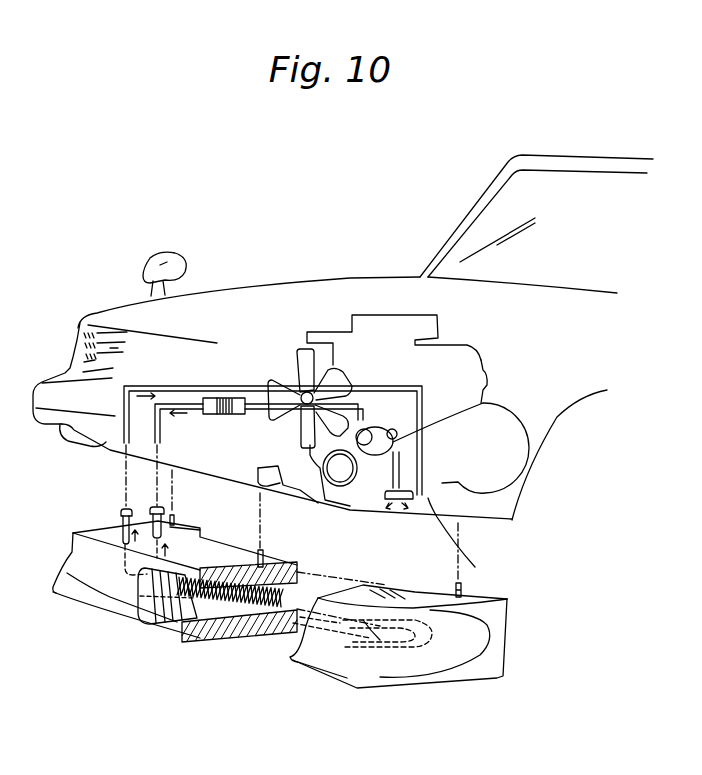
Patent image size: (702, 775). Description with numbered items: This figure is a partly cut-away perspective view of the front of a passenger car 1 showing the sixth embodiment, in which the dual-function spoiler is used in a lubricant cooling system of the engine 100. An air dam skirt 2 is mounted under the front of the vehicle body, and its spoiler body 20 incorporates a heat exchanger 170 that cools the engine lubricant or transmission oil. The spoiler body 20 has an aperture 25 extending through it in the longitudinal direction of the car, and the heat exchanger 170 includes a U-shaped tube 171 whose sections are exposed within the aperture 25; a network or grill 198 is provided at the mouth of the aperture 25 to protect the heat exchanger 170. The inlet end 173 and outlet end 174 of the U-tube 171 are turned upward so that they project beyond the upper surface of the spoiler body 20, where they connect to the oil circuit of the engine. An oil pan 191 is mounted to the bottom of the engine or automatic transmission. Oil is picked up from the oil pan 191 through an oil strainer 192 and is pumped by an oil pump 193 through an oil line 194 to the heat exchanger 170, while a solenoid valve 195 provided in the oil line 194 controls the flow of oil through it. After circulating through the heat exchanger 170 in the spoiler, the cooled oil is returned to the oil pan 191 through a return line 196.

The passenger car 1 is at (337, 256).
The engine 100 is at (412, 296).
The oil line 194 is at (257, 400).
The solenoid valve 195 is at (235, 398).
The return line 196 is at (140, 388).
The oil pump 193 is at (482, 402).
The oil pan 191 is at (487, 524).
The oil strainer 192 is at (472, 547).
The outlet end 174 is at (122, 517).
The inlet end 173 is at (173, 512).
The air dam skirt 2 is at (80, 610).
The spoiler body 20 is at (110, 618).
The grill 198 is at (152, 607).
The aperture 25 is at (200, 610).
The heat exchanger 170 is at (248, 613).
The U-shaped tube 171 is at (370, 638).